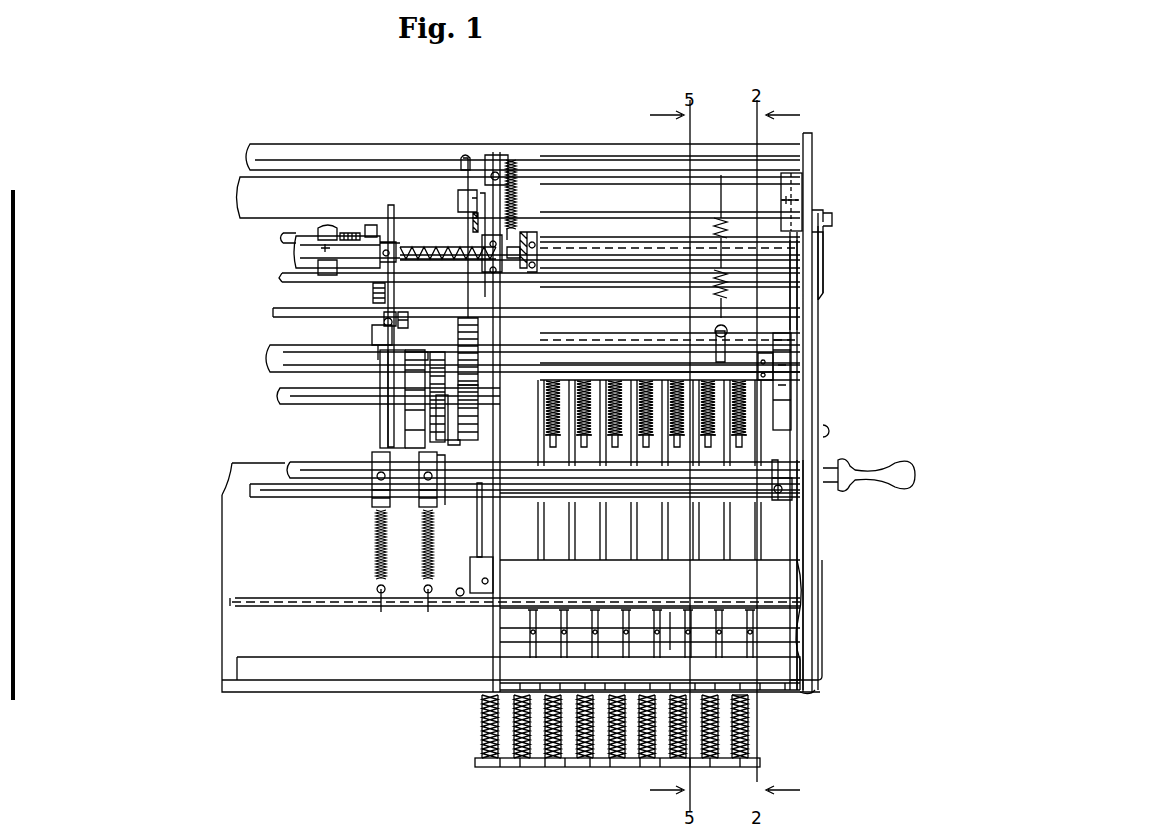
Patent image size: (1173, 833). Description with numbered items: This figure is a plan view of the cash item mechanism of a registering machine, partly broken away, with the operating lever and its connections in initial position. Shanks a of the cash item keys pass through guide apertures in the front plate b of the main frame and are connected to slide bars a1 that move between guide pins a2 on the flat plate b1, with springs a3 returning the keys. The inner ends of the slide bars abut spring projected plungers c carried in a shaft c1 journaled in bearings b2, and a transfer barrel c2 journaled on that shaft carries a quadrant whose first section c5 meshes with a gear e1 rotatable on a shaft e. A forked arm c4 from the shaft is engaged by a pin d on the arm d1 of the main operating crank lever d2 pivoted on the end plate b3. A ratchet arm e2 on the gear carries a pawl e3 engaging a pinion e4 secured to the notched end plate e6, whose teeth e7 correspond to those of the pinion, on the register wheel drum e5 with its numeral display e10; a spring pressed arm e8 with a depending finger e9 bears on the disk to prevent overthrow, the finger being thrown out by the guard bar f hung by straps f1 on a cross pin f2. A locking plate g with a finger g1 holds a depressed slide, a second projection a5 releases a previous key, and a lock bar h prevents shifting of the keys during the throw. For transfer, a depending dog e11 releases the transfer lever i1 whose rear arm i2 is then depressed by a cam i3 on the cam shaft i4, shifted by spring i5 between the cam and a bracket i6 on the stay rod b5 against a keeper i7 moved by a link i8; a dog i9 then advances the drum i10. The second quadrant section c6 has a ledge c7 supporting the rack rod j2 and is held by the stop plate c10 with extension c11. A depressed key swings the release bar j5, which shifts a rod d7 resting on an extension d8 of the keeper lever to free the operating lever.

The stop plate c10 is at (275, 145).
The second section of quadrant c6 is at (463, 180).
The bearing ledge c7 is at (458, 200).
The extension of stop plate c11 is at (518, 193).
The rack rod j2 is at (517, 208).
The spring i5 is at (352, 232).
The rear depending arm of transfer lever i2 is at (396, 218).
The cam shaft i4 is at (283, 247).
The stay rod b5 is at (300, 277).
The bracket i6 is at (324, 276).
The cam i3 is at (373, 295).
The depending dog e11 is at (410, 308).
The teeth of notched end plate e7 is at (462, 280).
The transfer lever i1 is at (384, 322).
The notched end plate e6 is at (445, 344).
The first section of quadrant c5 is at (478, 330).
The dog i9 is at (372, 340).
The shaft c1 is at (265, 362).
The pinion e4 is at (472, 386).
The spring projected plunger c is at (616, 385).
The transfer barrel c2 is at (638, 338).
The gear e1 is at (290, 405).
The indicator plate e10 is at (385, 400).
The drum i10 is at (385, 414).
The register wheel side periphery (drum) e5 is at (405, 432).
The shaft e is at (462, 425).
The ratchet arm e2 is at (462, 445).
The spring pressed arm e8 is at (416, 475).
The depending finger e9 is at (432, 508).
The pawl e3 is at (440, 460).
The guard bar f is at (338, 498).
The cross pin f2 is at (652, 498).
The strap f1 is at (782, 500).
The slide bar a1 is at (720, 540).
The finger g1 is at (490, 556).
The flat plate of frame b1 is at (224, 545).
The lock bar h is at (258, 607).
The guide pin a2 is at (533, 640).
The second projection a5 is at (664, 612).
The spring a3 is at (750, 706).
The shank of cash item key a is at (485, 745).
The pin d is at (610, 768).
The front plate of main frame b is at (372, 694).
The release bar j5 is at (790, 672).
The rod d7 is at (800, 622).
The locking plate g is at (780, 575).
The end plate of main frame b3 is at (815, 530).
The main operating crank lever d2 is at (828, 457).
The forked arm c4 is at (783, 394).
The arm of operating lever d1 is at (818, 326).
The bearing b2 is at (794, 332).
The link i8 is at (823, 268).
The keeper i7 is at (832, 234).
The extension of keeper lever d8 is at (803, 186).